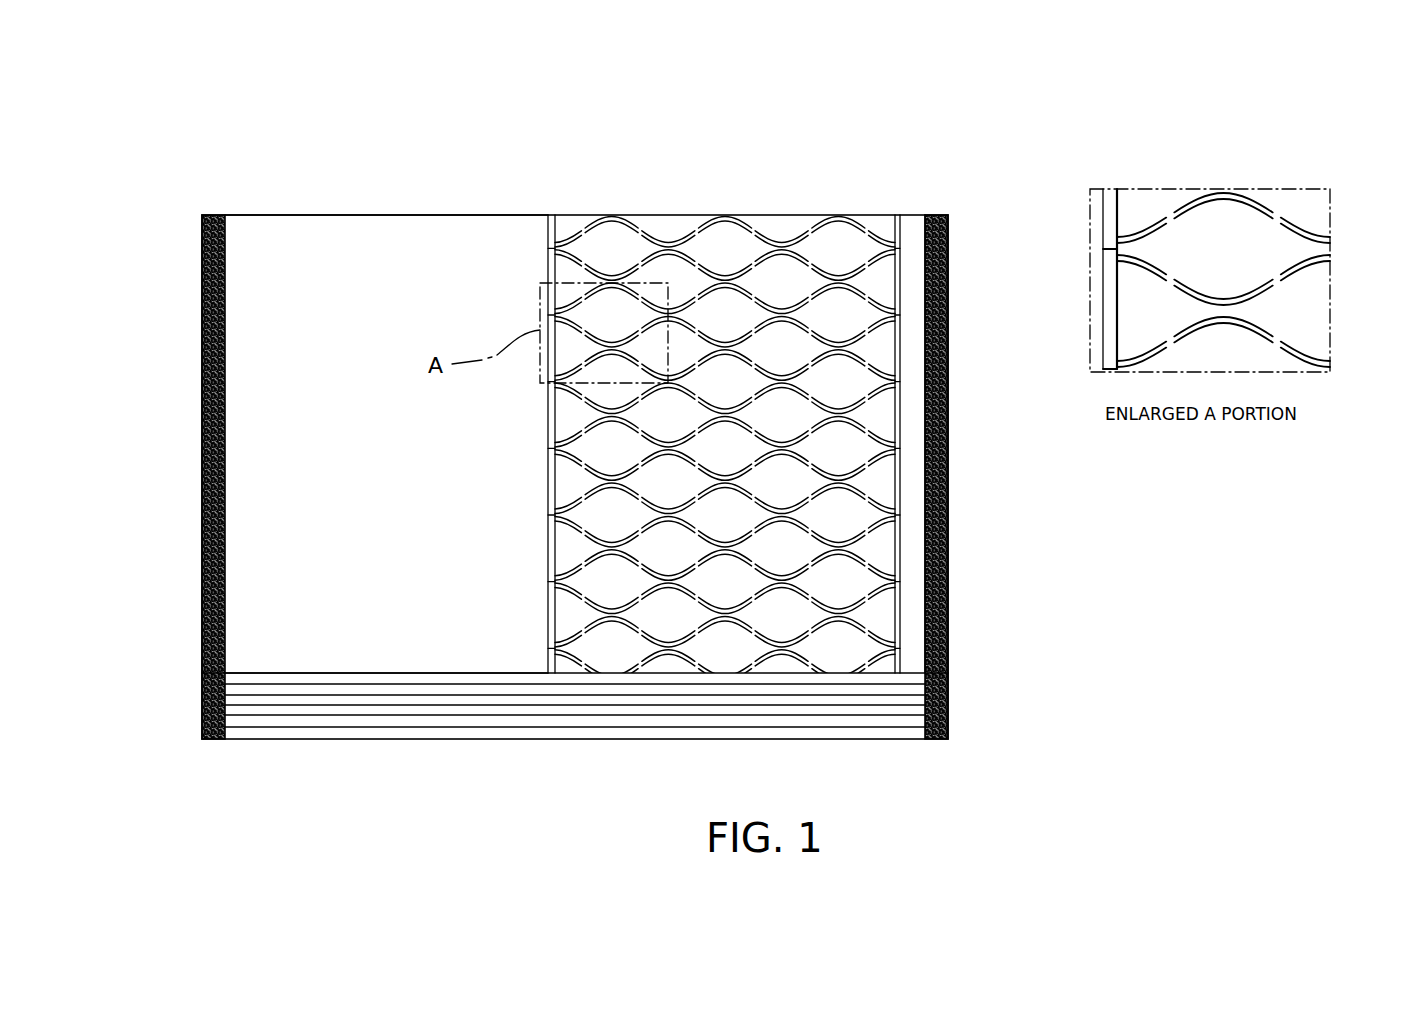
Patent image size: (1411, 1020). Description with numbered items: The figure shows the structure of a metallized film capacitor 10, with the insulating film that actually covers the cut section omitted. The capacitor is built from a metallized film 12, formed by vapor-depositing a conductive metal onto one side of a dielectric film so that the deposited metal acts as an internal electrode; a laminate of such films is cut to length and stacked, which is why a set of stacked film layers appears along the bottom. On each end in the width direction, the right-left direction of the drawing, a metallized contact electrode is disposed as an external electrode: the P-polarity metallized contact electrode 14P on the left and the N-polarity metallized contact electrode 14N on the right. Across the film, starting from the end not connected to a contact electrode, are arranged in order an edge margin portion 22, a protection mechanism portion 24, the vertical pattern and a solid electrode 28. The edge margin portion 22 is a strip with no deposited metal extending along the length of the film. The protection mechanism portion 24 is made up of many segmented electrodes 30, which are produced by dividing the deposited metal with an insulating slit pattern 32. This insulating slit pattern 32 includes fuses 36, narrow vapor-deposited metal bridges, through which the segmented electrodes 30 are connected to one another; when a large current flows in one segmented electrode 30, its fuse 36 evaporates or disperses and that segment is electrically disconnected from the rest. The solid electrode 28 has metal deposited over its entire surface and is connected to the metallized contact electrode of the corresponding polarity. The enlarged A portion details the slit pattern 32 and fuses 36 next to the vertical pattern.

The metallized film capacitor 10 is at (850, 127).
The metallized film 12 is at (468, 676).
The P-polarity metallized contact electrode 14P is at (205, 560).
The N-polarity metallized contact electrode 14N is at (952, 548).
The edge margin portion 22 is at (910, 228).
The protection mechanism portion 24 is at (724, 378).
The solid electrode 28 is at (355, 252).
The segmented electrode 30 is at (608, 250).
The insulating slit pattern 32 is at (1258, 193).
The fuse 36 is at (1165, 230).